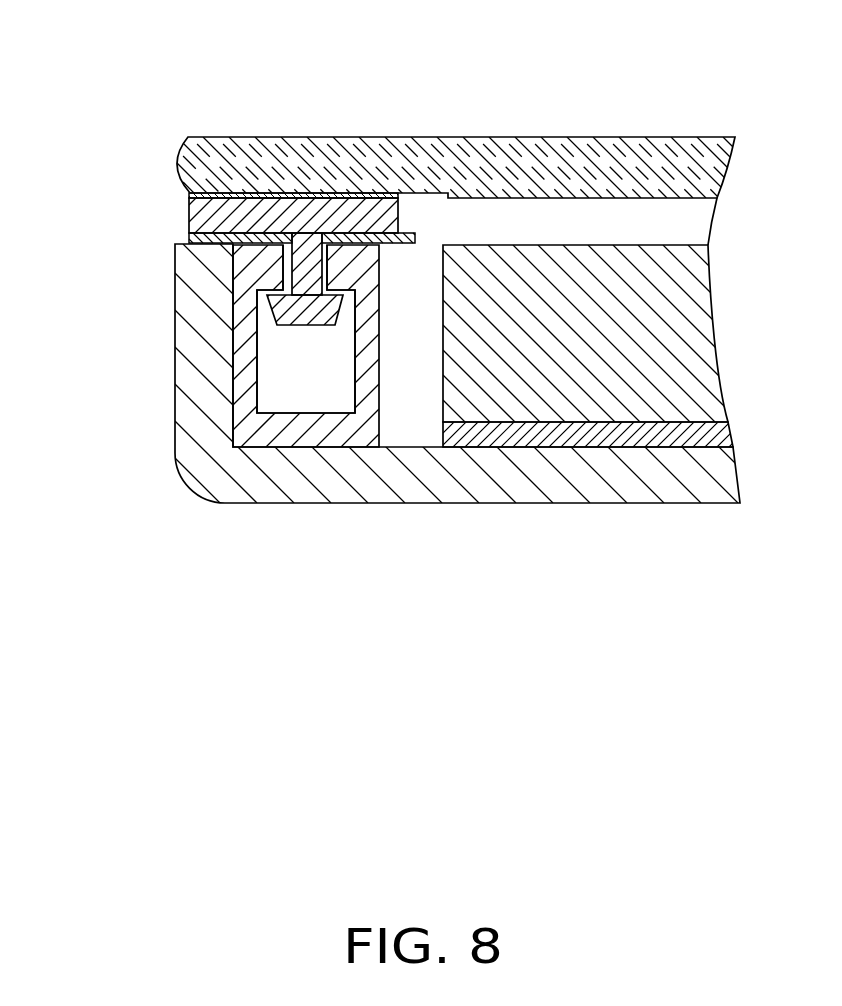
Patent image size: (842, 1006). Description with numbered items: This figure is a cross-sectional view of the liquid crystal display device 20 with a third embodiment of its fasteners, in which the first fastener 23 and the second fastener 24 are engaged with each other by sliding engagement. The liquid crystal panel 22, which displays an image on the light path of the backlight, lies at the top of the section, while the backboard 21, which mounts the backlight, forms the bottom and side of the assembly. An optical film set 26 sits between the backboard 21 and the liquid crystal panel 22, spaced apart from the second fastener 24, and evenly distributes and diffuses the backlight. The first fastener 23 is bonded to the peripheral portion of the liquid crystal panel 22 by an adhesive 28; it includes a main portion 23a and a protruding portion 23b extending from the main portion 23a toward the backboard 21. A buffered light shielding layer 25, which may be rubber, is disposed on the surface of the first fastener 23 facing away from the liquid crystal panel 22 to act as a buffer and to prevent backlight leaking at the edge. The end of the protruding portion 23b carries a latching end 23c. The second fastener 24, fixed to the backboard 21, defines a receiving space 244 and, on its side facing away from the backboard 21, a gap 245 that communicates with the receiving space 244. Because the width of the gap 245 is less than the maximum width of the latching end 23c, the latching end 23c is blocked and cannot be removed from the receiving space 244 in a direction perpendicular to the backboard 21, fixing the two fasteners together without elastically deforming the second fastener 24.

The liquid crystal display device 20 is at (465, 97).
The backboard 21 is at (208, 431).
The liquid crystal panel 22 is at (568, 160).
The first fastener 23 is at (93, 195).
The main portion 23a is at (232, 216).
The protruding portion 23b is at (303, 273).
The latching end 23c is at (278, 305).
The second fastener 24 is at (98, 352).
The receiving space 244 is at (277, 384).
The gap 245 is at (313, 297).
The buffered light shielding layer 25 is at (358, 240).
The optical film set 26 is at (675, 337).
The adhesive 28 is at (262, 192).